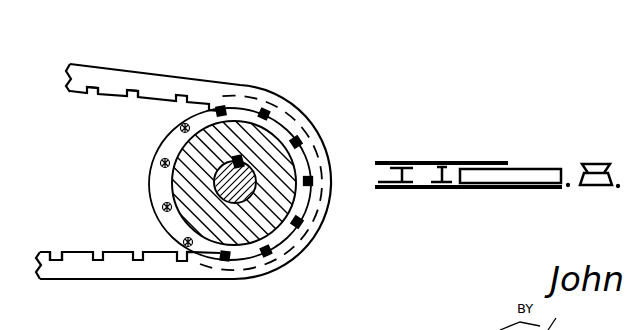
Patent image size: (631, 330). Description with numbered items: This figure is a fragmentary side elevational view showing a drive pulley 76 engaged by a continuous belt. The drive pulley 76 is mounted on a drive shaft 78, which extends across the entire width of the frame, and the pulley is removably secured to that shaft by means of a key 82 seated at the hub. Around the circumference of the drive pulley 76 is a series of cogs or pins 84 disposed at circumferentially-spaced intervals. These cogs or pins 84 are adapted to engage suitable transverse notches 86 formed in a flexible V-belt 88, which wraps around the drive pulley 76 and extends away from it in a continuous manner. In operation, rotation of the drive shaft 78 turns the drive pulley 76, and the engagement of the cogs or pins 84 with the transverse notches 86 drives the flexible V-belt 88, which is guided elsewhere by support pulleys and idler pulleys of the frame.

The drive pulley 76 is at (262, 142).
The drive shaft 78 is at (252, 185).
The key 82 is at (243, 161).
The cogs or pins 84 is at (222, 110).
The transverse notches 86 is at (137, 96).
The flexible V-belt 88 is at (178, 82).